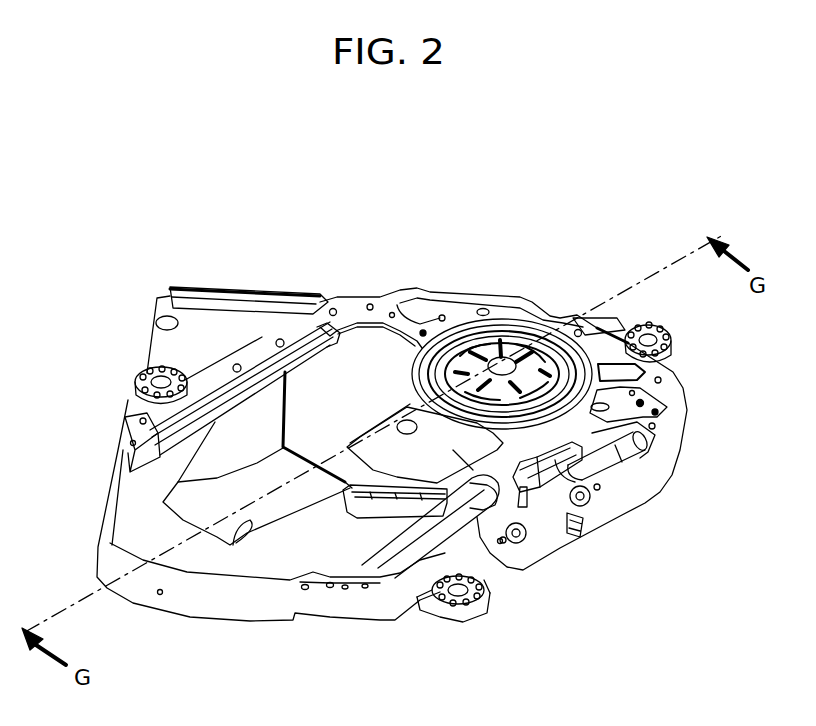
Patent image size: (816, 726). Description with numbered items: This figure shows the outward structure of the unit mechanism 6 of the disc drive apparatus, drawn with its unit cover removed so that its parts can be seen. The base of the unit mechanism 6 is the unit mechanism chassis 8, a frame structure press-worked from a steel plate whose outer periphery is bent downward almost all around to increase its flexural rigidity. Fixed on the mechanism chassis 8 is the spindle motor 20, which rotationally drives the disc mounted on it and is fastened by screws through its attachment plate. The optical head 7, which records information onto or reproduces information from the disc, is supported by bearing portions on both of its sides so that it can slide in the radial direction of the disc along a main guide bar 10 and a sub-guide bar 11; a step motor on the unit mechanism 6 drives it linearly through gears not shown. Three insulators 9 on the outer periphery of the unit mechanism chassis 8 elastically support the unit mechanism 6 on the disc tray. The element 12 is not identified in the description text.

The unit mechanism 6 is at (552, 292).
The optical head 7 is at (480, 538).
The unit mechanism chassis 8 is at (163, 580).
The insulators 9 is at (142, 400).
The main guide bar 10 is at (420, 560).
The sub-guide bar 11 is at (275, 385).
The cylinder / shaft 12 is at (655, 462).
The spindle motor 20 is at (463, 352).